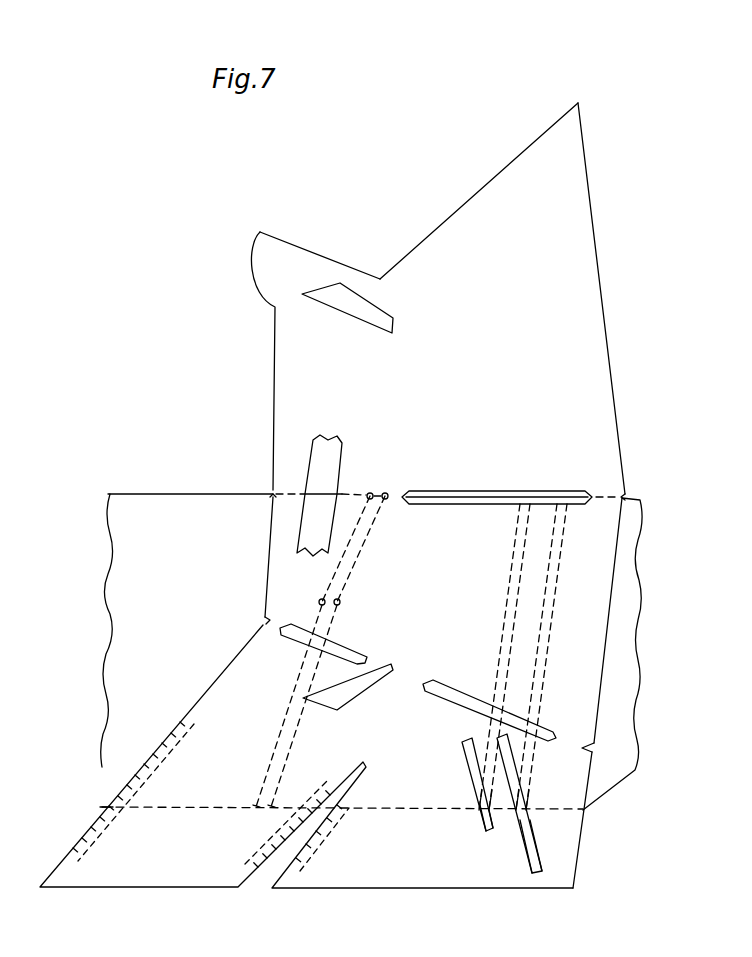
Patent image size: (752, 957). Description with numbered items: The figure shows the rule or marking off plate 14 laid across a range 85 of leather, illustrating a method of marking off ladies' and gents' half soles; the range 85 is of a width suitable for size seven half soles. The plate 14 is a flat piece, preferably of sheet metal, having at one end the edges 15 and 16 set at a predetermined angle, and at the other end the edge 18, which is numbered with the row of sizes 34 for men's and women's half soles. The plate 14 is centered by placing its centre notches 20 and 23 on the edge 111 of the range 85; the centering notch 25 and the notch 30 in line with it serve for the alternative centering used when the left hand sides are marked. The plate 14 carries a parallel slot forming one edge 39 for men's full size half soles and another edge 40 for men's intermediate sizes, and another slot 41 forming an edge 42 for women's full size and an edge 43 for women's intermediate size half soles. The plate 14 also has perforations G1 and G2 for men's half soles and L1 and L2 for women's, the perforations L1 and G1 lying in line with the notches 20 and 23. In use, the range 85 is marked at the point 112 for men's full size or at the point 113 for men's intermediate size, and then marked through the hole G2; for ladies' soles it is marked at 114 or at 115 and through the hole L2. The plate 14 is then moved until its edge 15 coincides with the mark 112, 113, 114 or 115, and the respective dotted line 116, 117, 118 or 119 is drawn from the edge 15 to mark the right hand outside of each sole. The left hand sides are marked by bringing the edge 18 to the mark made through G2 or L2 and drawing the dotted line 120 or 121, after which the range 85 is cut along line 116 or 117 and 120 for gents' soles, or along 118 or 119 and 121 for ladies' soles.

The rule or marking off plate 14 is at (414, 296).
The edge 16 is at (613, 397).
The centre notch 23 is at (625, 495).
The edge 111 is at (178, 494).
The centre notch 20 is at (267, 495).
The range 85 is at (139, 650).
The centering notch 25 is at (265, 625).
The edge 18 is at (207, 690).
The dotted line 121 is at (278, 743).
The dotted line 120 is at (297, 727).
The dotted line 118 is at (518, 596).
The dotted line 119 is at (505, 618).
The dotted line 116 is at (553, 613).
The dotted line 117 is at (540, 648).
The edge 15 is at (598, 717).
The centering notch 30 is at (587, 748).
The slot 41 is at (472, 758).
The edge 43 is at (483, 820).
The edge 42 is at (493, 820).
The edge 40 is at (533, 858).
The row of sizes 34 is at (535, 847).
The edge 39 is at (542, 862).
The point 113 is at (520, 800).
The point 112 is at (527, 810).
The mark 115 is at (480, 805).
The mark 114 is at (495, 797).
The perforation L1 is at (357, 487).
The perforation G1 is at (394, 488).
The perforation L2 is at (337, 550).
The perforation G2 is at (359, 552).